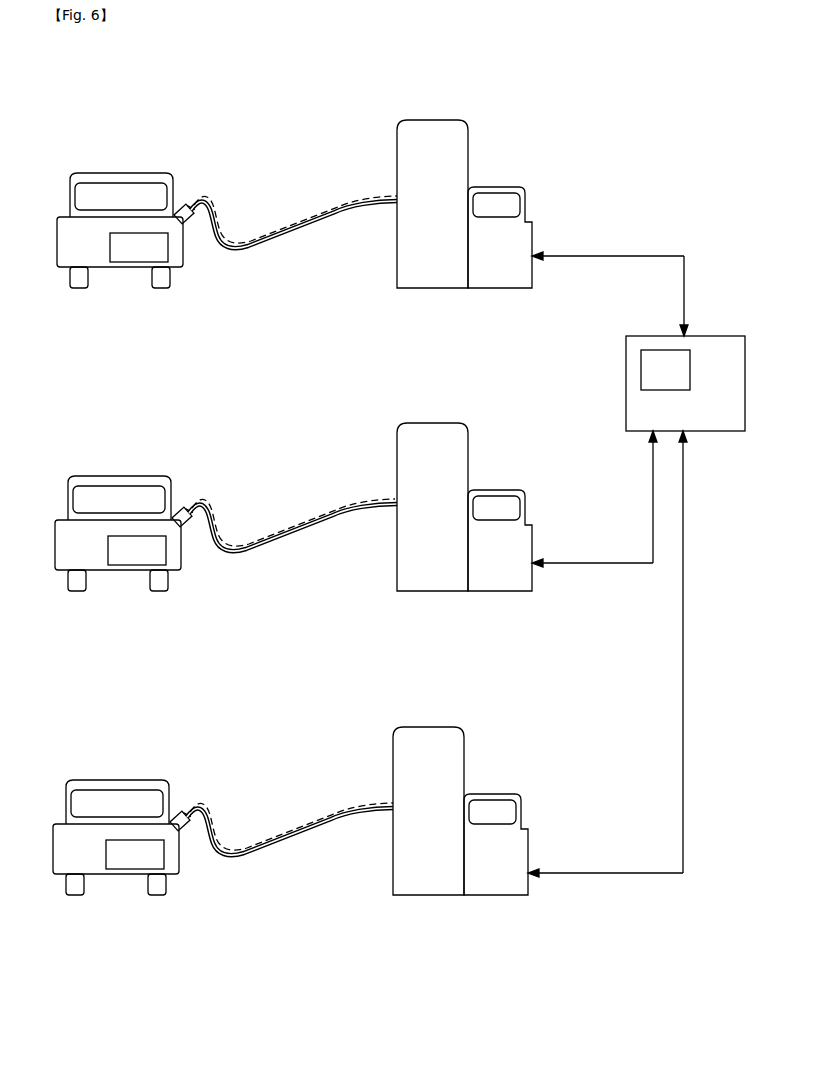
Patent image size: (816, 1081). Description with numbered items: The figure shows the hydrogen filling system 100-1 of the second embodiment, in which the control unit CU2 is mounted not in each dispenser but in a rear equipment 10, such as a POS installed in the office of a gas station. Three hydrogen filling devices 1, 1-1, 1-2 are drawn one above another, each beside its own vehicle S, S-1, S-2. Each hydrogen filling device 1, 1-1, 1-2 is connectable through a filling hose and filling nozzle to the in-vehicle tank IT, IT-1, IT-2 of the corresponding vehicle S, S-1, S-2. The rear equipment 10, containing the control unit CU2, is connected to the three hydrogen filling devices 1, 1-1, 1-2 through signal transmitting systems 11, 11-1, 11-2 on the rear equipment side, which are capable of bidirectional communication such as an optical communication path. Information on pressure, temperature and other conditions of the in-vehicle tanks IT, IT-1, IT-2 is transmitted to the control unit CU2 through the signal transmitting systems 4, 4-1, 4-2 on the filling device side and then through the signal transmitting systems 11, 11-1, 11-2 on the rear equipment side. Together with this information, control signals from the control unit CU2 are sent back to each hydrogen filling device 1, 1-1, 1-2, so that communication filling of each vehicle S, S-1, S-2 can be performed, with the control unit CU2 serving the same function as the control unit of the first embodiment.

The hydrogen filling system 100-1 is at (596, 105).
The vehicle S is at (120, 221).
The vehicle S-1 is at (118, 524).
The vehicle S-2 is at (116, 830).
The in-vehicle tank IT is at (133, 262).
The in-vehicle tank IT-1 is at (131, 565).
The in-vehicle tank IT-2 is at (130, 870).
The signal transmitting system 4 is at (264, 235).
The signal transmitting system 4-1 is at (262, 538).
The signal transmitting system 4-2 is at (258, 843).
The hydrogen filling device 1 is at (468, 142).
The hydrogen filling device 1-1 is at (468, 445).
The hydrogen filling device 1-2 is at (464, 748).
The signal transmitting system 11 is at (634, 256).
The signal transmitting system 11-1 is at (590, 563).
The signal transmitting system 11-2 is at (592, 873).
The rear equipment 10 is at (680, 352).
The control unit CU2 is at (650, 355).